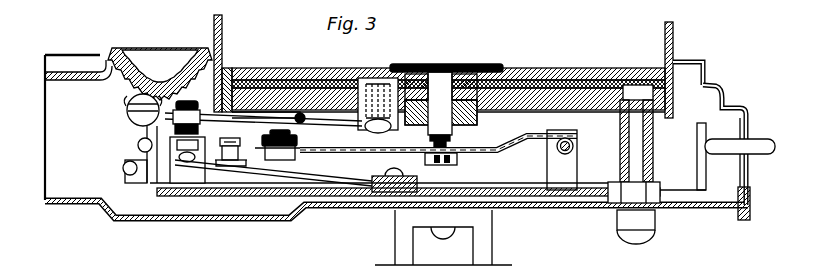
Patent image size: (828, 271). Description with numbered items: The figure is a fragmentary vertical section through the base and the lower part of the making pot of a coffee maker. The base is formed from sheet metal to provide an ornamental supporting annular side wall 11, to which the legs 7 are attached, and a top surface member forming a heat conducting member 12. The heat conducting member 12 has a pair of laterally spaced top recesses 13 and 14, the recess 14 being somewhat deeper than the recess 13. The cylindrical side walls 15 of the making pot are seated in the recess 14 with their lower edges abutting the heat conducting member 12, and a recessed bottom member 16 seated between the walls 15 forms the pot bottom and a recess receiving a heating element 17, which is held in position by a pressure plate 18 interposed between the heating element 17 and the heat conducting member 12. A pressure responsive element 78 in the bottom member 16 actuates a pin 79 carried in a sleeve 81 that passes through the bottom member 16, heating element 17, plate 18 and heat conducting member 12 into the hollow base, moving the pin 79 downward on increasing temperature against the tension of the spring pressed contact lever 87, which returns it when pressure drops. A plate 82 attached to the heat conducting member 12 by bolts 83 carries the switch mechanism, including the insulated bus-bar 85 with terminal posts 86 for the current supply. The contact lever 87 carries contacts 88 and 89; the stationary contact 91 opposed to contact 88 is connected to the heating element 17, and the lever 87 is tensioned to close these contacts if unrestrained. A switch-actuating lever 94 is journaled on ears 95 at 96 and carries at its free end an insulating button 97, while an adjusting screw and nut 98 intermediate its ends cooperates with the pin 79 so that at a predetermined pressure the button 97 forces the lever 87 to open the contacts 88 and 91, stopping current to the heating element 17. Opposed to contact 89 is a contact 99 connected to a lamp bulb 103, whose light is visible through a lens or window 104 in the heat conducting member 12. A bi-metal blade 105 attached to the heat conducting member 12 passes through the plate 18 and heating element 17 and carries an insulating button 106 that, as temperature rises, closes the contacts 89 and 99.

The legs 7 is at (483, 246).
The annular side wall 11 is at (724, 95).
The heat conducting member 12 is at (687, 64).
The top recess 13 is at (100, 60).
The top recess 14 is at (228, 72).
The cylindrical side walls 15 is at (223, 23).
The recessed bottom member 16 is at (565, 72).
The heating element 17 is at (592, 82).
The pressure plate 18 is at (547, 96).
The pressure responsive element 78 is at (420, 66).
The pin 79 is at (443, 76).
The sleeve 81 is at (447, 93).
The plate 82 is at (573, 200).
The bolts 83 is at (638, 143).
The bus-bar 85 is at (700, 189).
The terminal posts 86 is at (754, 142).
The spring pressed contact lever 87 is at (346, 177).
The contact 88 is at (227, 163).
The contact 89 is at (187, 163).
The stationary contact 91 is at (247, 165).
The switch-actuating lever 94 is at (503, 151).
The ears 95 is at (557, 170).
The journal 96 is at (577, 146).
The button 97 is at (300, 164).
The adjusting screw and nut 98 is at (433, 166).
The contact 99 is at (167, 146).
The lamp bulb 103 is at (134, 120).
The lens or window 104 is at (142, 58).
The bi-metal blade 105 is at (316, 137).
The button 106 is at (205, 134).